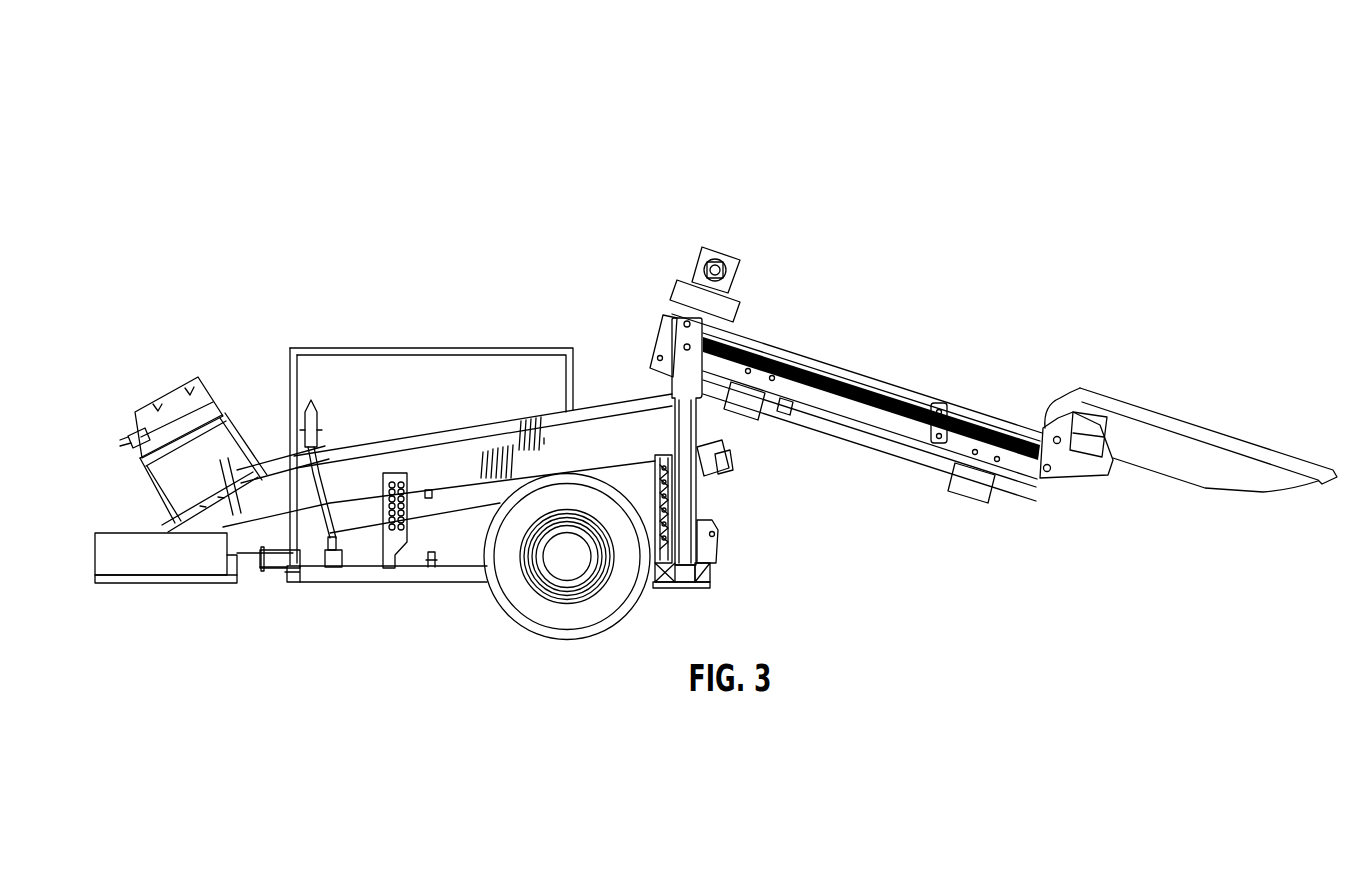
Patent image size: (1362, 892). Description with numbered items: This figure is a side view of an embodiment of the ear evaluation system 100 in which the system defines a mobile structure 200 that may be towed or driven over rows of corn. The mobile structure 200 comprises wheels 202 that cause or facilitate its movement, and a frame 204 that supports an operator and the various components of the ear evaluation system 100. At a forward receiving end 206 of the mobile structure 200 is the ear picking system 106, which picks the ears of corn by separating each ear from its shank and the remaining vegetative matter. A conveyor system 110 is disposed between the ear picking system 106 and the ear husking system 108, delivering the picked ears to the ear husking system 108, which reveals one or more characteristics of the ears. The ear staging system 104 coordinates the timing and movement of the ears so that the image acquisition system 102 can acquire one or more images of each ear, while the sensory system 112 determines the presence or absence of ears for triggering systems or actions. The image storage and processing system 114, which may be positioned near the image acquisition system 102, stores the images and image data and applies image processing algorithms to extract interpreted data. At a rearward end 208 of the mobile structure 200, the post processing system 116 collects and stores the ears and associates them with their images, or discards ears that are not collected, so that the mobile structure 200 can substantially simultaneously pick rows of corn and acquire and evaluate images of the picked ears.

The ear evaluation system 100 is at (975, 124).
The image acquisition system 102 is at (130, 462).
The ear staging system 104 is at (333, 417).
The ear picking system 106 is at (1197, 428).
The ear husking system 108 is at (623, 392).
The conveyor system 110 is at (866, 376).
The sensory system 112 is at (264, 358).
The image storage and processing system 114 is at (171, 389).
The post processing system 116 is at (90, 533).
The mobile structure 200 is at (486, 594).
The wheels 202 is at (589, 623).
The frame 204 is at (353, 588).
The forward receiving end 206 is at (1337, 478).
The rearward end 208 is at (90, 560).